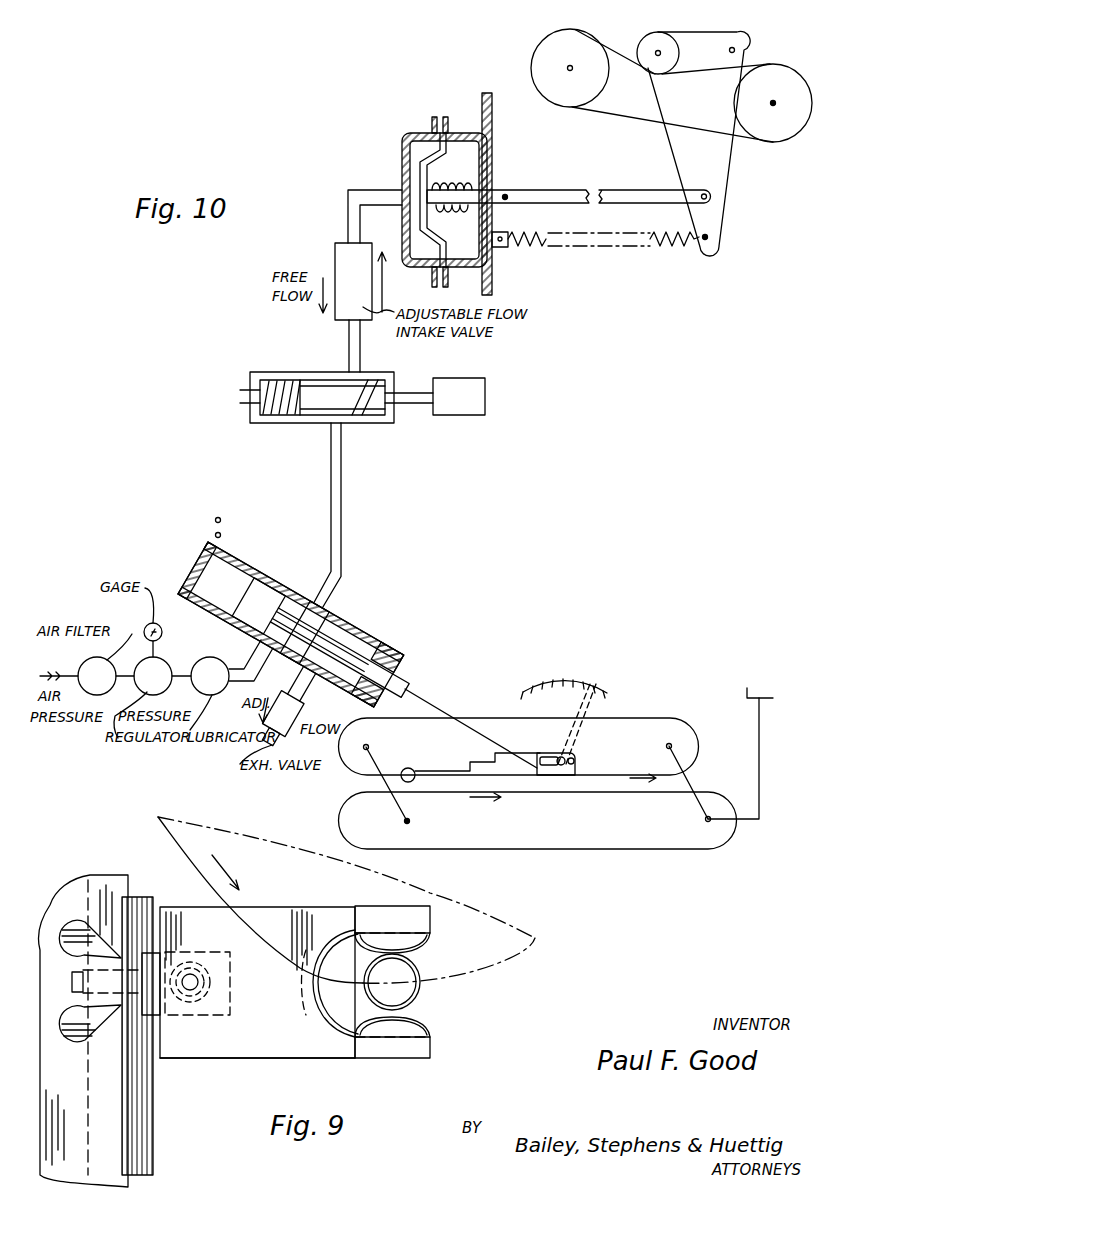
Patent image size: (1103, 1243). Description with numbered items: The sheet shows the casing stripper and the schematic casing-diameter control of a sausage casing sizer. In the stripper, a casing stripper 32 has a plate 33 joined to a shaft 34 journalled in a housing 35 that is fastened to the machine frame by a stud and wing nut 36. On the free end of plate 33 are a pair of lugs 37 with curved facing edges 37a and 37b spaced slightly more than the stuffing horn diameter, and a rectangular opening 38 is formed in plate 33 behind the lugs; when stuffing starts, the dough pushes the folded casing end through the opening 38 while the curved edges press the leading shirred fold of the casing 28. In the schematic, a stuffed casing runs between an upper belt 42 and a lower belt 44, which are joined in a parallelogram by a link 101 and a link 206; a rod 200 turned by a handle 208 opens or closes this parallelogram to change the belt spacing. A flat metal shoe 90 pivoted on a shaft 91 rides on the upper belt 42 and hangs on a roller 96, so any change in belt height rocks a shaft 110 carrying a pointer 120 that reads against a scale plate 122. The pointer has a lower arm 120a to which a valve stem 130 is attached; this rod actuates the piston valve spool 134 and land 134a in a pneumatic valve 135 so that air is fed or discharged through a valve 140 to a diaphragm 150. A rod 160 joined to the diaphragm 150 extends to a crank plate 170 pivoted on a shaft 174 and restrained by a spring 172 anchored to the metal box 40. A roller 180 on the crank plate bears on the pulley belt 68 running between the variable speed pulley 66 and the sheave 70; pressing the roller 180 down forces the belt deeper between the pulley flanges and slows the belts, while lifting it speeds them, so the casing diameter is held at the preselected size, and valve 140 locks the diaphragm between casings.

In FIG. 10, the variable speed pulley 66 is at (555, 47).
In FIG. 10, the roller 180 is at (655, 32).
In FIG. 10, the shaft 174 is at (737, 50).
In FIG. 10, the sheave 70 is at (790, 78).
In FIG. 10, the pulley belt 68 is at (642, 112).
In FIG. 10, the metal box 40 is at (492, 140).
In FIG. 9, the metal box 40 is at (70, 900).
In FIG. 10, the diaphragm 150 is at (429, 175).
In FIG. 10, the rod 160 is at (558, 196).
In FIG. 10, the crank plate 170 is at (718, 176).
In FIG. 10, the spring 172 is at (622, 246).
In FIG. 10, the valve 140 is at (385, 423).
In FIG. 10, the pneumatic valve 135 is at (228, 546).
In FIG. 10, the land 134a is at (303, 622).
In FIG. 10, the piston valve spool 134 is at (408, 676).
In FIG. 10, the valve stem 130 is at (483, 745).
In FIG. 10, the upper belt 42 is at (430, 720).
In FIG. 10, the lower belt 44 is at (522, 795).
In FIG. 10, the link 101 is at (368, 780).
In FIG. 10, the link 206 is at (690, 800).
In FIG. 10, the rod 200 is at (760, 728).
In FIG. 10, the handle 208 is at (755, 681).
In FIG. 10, the shaft 91 is at (418, 756).
In FIG. 10, the shoe 90 is at (470, 767).
In FIG. 10, the shaft 110 is at (577, 759).
In FIG. 10, the roller 96 is at (538, 752).
In FIG. 10, the lower arm 120a is at (562, 776).
In FIG. 10, the pointer 120 is at (595, 695).
In FIG. 10, the scale plate 122 is at (607, 680).
In FIG. 9, the stud and wing nut 36 is at (72, 985).
In FIG. 9, the housing 35 is at (153, 1060).
In FIG. 9, the casing stripper 32 is at (226, 1066).
In FIG. 9, the plate 33 is at (283, 1050).
In FIG. 9, the shaft 34 is at (190, 975).
In FIG. 9, the lugs 37 is at (420, 925).
In FIG. 9, the curved facing edge 37a is at (425, 945).
In FIG. 9, the curved facing edge 37b is at (420, 1020).
In FIG. 9, the casing 28 is at (420, 985).
In FIG. 9, the rectangular opening 38 is at (318, 995).